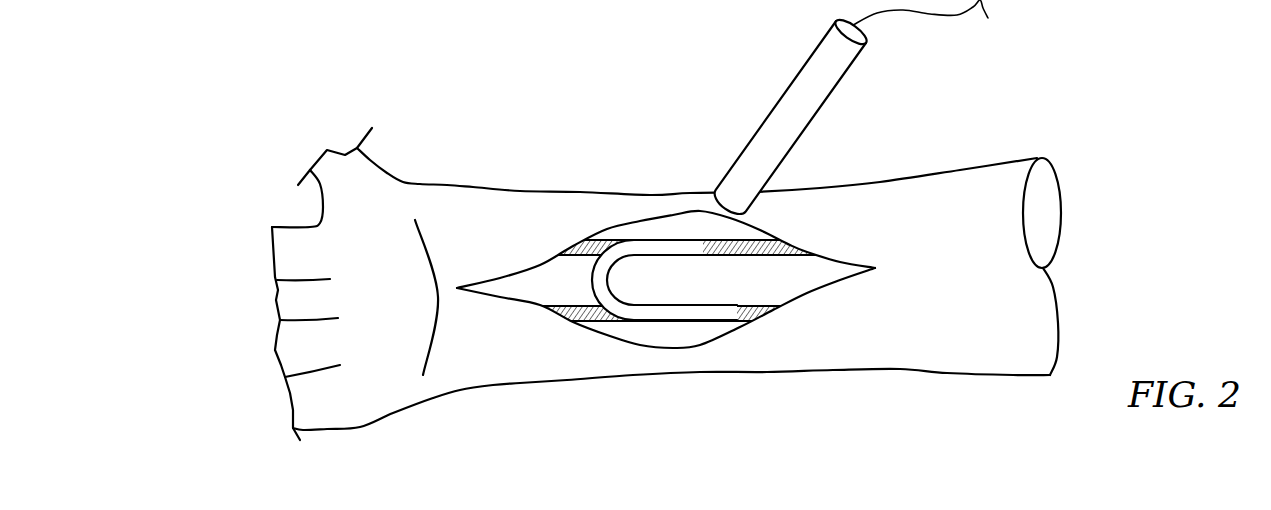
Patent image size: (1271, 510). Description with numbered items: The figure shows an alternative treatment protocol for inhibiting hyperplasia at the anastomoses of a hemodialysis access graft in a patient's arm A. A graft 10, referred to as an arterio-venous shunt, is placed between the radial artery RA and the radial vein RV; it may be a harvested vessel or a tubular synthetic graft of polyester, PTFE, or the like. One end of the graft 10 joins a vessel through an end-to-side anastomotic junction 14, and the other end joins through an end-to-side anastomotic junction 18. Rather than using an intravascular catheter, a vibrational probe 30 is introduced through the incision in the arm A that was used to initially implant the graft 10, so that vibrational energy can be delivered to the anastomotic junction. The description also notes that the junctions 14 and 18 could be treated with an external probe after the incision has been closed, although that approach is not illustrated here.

The graft 10 is at (664, 326).
The end-to-side anastomotic junction 14 is at (742, 241).
The end-to-side anastomotic junction 18 is at (812, 359).
The vibrational probe 30 is at (835, 62).
The radial vein RV is at (621, 202).
The radial artery RA is at (628, 364).
The arm A is at (666, 284).